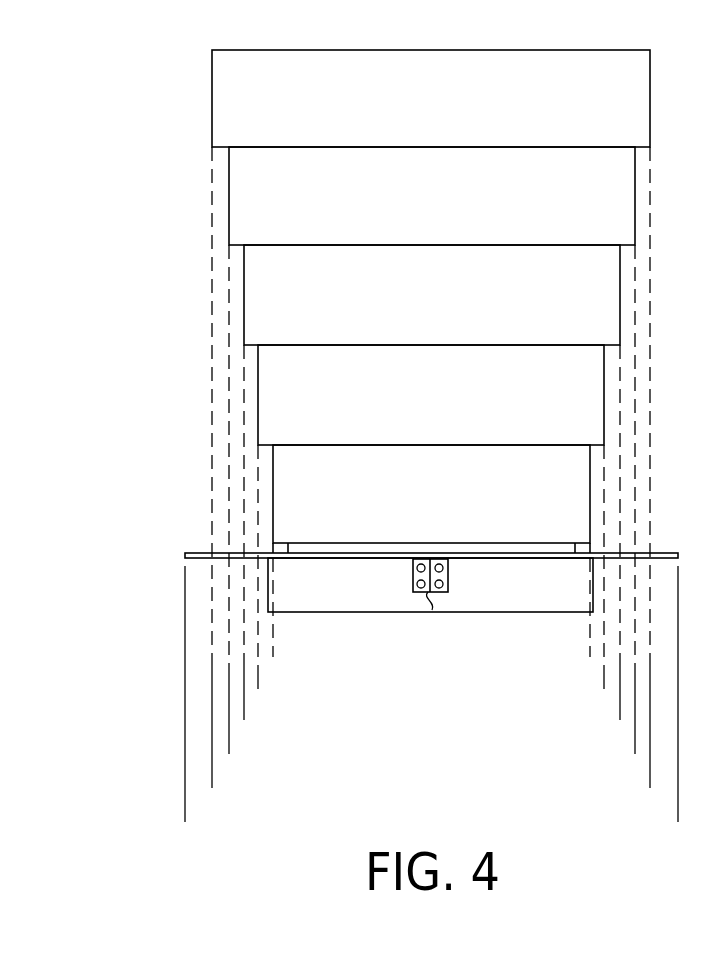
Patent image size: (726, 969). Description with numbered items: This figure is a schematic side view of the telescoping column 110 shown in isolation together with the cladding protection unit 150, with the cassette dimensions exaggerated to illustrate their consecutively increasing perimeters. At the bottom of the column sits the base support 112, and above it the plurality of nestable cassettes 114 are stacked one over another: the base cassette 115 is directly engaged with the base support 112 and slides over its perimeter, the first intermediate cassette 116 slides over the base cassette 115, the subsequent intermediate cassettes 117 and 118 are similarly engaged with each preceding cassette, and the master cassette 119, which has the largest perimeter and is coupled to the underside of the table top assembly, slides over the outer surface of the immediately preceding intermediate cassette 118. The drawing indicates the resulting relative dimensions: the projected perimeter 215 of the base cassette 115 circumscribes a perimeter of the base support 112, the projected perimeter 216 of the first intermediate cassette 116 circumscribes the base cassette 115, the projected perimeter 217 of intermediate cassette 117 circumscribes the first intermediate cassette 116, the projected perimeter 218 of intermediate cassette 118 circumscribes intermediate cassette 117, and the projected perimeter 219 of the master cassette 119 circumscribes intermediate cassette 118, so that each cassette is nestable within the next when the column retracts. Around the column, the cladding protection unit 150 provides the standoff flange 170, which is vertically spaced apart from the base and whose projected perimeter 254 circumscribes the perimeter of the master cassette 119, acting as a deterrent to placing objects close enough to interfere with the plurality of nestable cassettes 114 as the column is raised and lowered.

The telescoping column 110 is at (162, 263).
The base support 112 is at (509, 547).
The plurality of nestable cassettes 114 is at (158, 307).
The base cassette 115 is at (391, 508).
The first intermediate cassette 116 is at (453, 409).
The intermediate cassette 117 is at (453, 309).
The intermediate cassette 118 is at (453, 209).
The master cassette 119 is at (453, 113).
The cladding protection unit 150 is at (152, 554).
The standoff flange 170 is at (668, 552).
The projected perimeter of base cassette 215 is at (590, 650).
The projected perimeter of first intermediate cassette 216 is at (258, 682).
The projected perimeter of intermediate cassette 217 is at (620, 713).
The projected perimeter of intermediate cassette 218 is at (635, 745).
The projected perimeter of master cassette 219 is at (212, 780).
The projected perimeter of standoff flange 254 is at (678, 813).